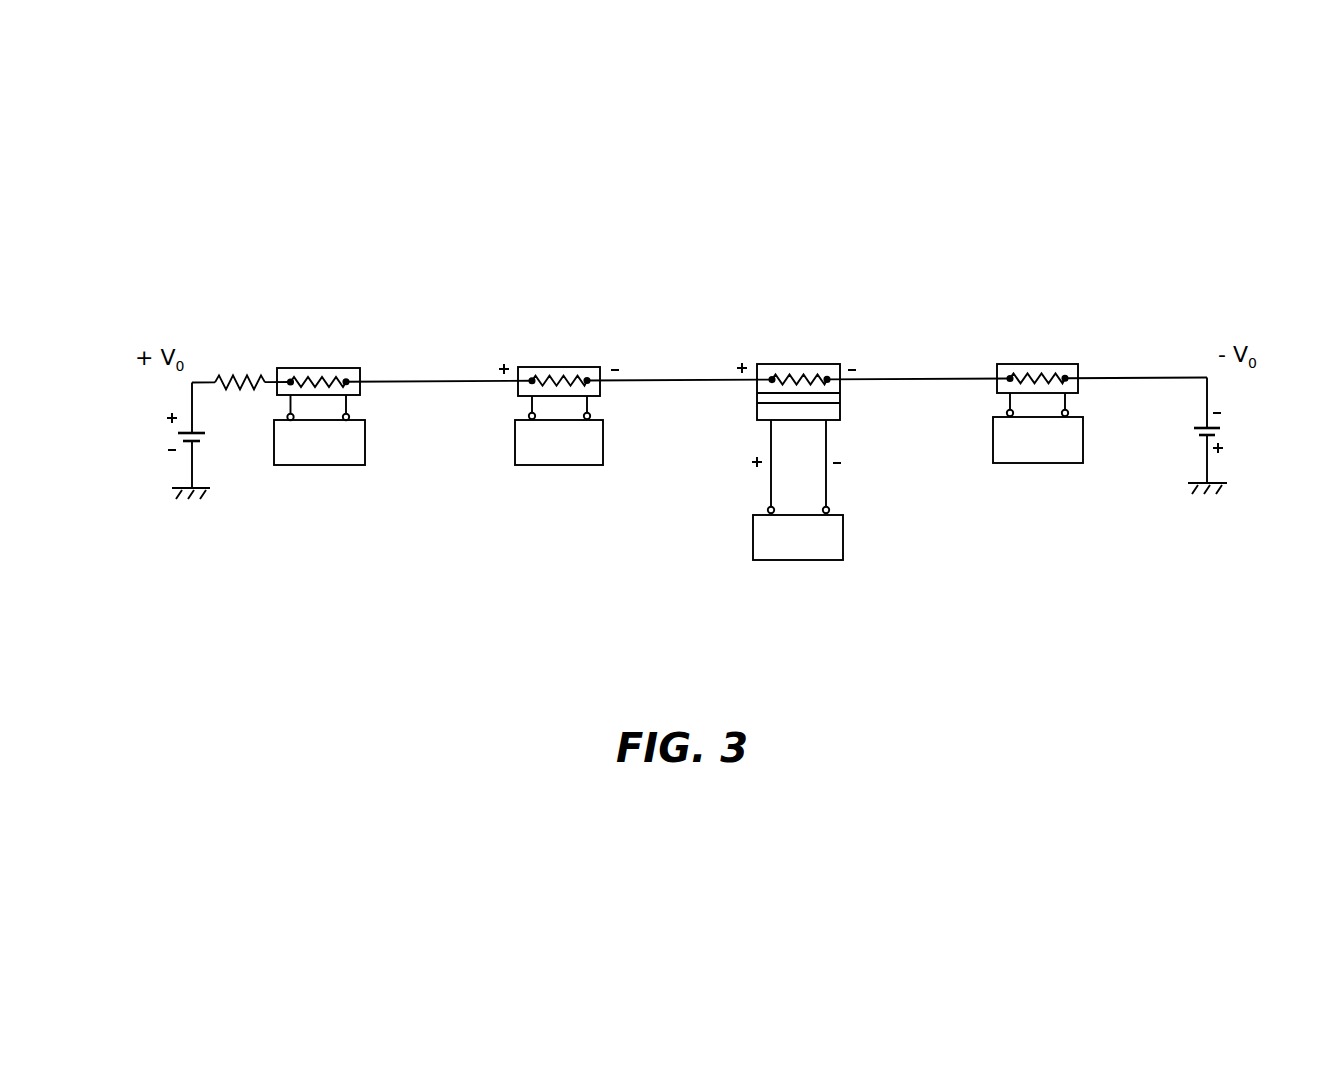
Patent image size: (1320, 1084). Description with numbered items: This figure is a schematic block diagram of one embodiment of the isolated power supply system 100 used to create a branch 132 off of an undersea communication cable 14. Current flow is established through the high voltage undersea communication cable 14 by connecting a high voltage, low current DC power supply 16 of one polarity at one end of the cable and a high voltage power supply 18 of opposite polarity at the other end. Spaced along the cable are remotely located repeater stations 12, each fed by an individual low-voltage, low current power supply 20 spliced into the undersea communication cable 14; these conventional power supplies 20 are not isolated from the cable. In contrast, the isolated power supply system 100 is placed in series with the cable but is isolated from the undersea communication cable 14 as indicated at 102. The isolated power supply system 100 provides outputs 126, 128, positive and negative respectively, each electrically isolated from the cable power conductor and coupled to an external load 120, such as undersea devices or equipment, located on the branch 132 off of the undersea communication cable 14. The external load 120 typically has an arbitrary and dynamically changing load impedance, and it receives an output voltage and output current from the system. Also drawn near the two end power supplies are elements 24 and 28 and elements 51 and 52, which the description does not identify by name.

The repeater station 12 is at (317, 466).
The undersea communication cable 14 is at (694, 290).
The high voltage, low current DC power supply 16 is at (205, 437).
The high voltage power supply 18 is at (1194, 432).
The low-voltage, low current power supply 20 is at (330, 367).
The positive supply terminal 24 is at (158, 437).
The negative supply terminal 28 is at (1256, 433).
The ground 51 is at (1198, 497).
The ground 52 is at (188, 500).
The isolated power supply system 100 is at (831, 336).
The isolation 102 is at (840, 398).
The external load 120 is at (795, 560).
The output 126 is at (770, 488).
The output 128 is at (827, 488).
The branch 132 is at (787, 462).